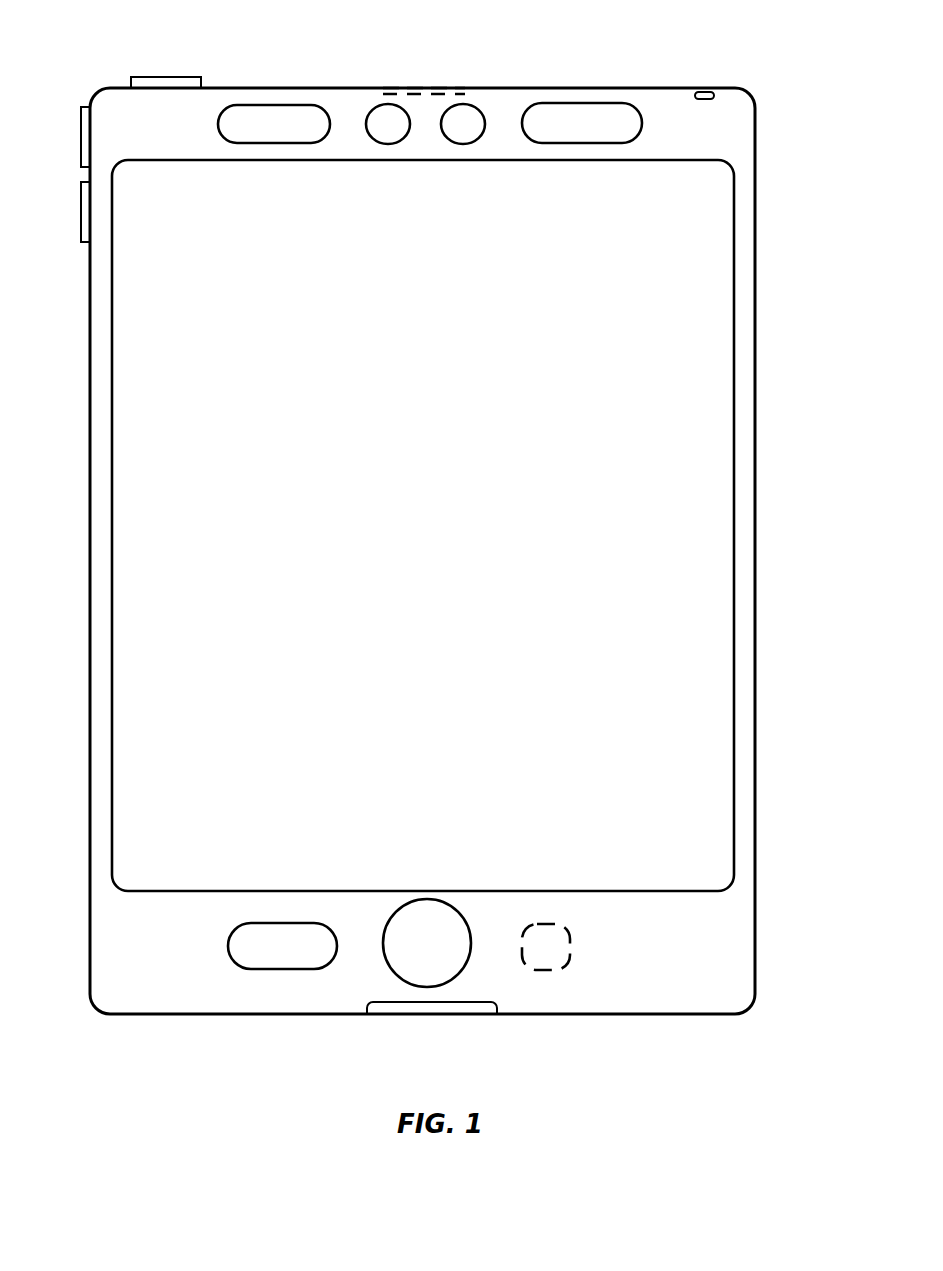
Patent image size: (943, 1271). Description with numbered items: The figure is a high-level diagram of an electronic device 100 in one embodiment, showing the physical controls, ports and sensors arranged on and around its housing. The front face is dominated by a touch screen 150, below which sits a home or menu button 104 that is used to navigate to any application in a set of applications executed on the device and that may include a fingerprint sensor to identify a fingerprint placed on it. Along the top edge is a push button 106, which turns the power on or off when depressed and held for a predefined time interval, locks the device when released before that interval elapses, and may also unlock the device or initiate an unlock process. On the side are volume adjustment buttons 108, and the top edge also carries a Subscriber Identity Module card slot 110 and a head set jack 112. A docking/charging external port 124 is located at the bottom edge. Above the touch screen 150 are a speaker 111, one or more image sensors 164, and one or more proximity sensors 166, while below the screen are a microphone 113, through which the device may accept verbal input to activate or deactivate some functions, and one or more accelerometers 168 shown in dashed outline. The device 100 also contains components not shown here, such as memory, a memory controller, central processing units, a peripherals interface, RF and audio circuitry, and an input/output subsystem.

The electronic device 100 is at (792, 84).
The menu button 104 is at (427, 943).
The push button 106 is at (173, 77).
The volume adjustment buttons 108 is at (81, 137).
The Subscriber Identity Module (SIM) card slot 110 is at (407, 88).
The speaker 111 is at (261, 133).
The head set jack 112 is at (705, 92).
The microphone 113 is at (269, 955).
The docking/charging external port 124 is at (470, 1014).
The touch screen 150 is at (734, 428).
The image sensors 164 is at (375, 133).
The proximity sensors 166 is at (569, 133).
The accelerometers 168 is at (533, 955).